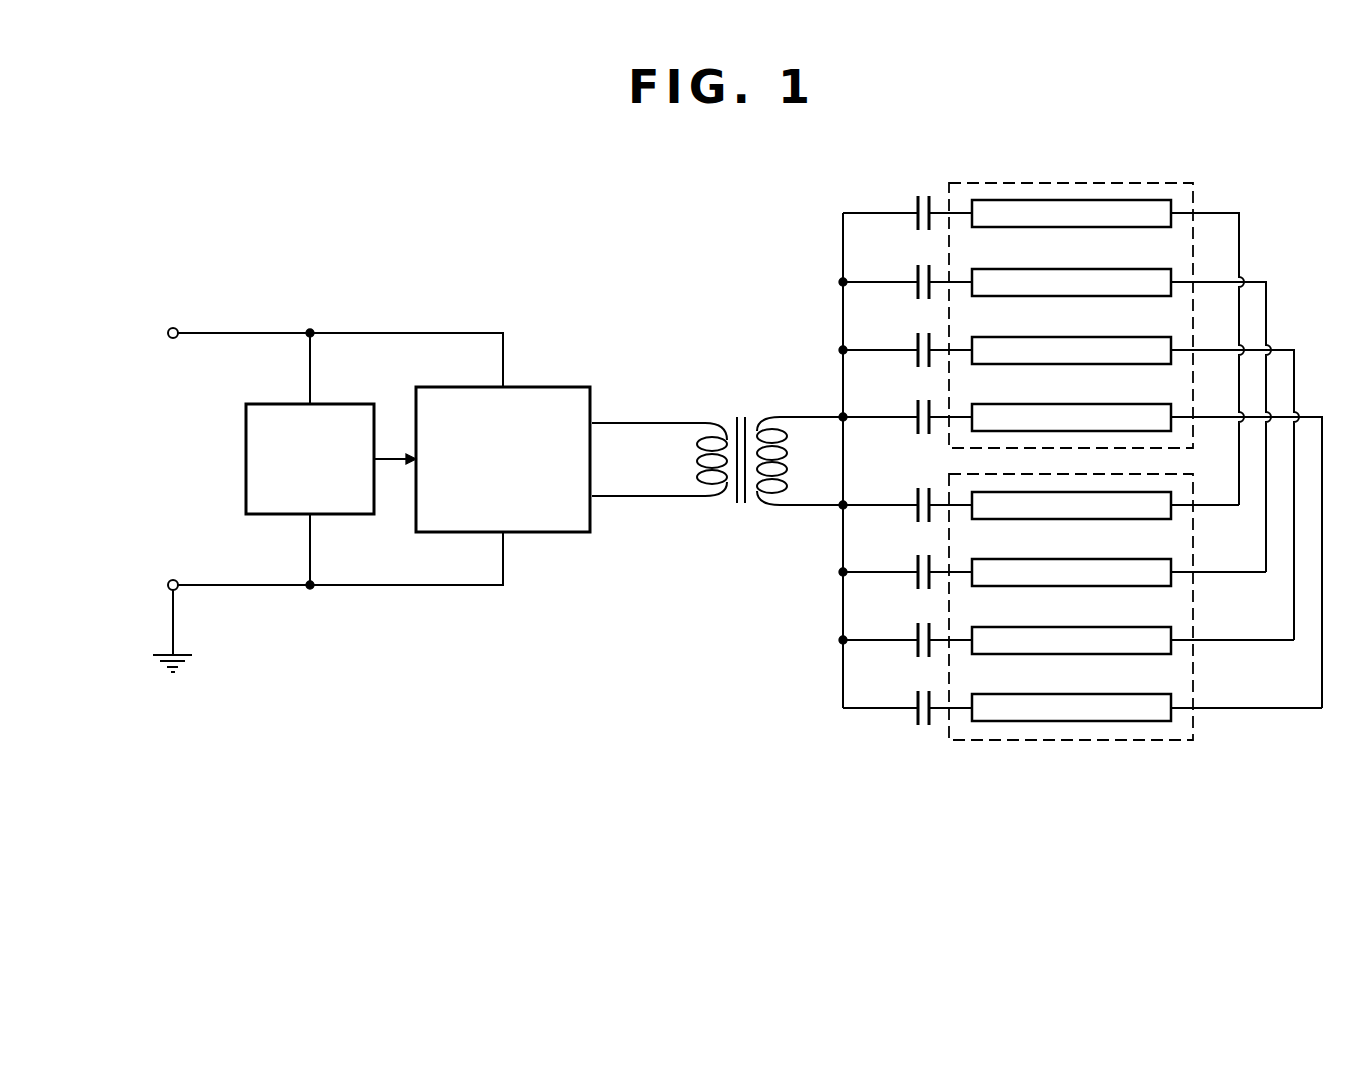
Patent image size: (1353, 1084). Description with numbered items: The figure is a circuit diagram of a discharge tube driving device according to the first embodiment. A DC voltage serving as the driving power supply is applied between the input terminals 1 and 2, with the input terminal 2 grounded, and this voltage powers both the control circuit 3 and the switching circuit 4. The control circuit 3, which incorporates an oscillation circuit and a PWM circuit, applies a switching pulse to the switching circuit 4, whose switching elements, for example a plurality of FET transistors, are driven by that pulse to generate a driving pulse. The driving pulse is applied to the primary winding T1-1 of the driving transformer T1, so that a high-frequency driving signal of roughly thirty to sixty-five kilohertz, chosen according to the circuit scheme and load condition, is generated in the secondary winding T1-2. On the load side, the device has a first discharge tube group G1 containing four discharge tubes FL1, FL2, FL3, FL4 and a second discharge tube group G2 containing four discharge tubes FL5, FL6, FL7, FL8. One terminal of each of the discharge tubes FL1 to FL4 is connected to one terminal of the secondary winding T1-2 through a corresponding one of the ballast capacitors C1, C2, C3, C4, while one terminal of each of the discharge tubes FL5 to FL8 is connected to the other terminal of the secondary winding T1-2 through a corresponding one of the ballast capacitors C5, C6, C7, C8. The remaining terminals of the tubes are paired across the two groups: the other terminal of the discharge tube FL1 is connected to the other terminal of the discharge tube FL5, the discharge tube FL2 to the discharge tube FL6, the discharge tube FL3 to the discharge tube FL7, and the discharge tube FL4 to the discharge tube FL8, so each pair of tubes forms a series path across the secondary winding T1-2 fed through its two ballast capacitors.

The input terminal 1 is at (173, 327).
The input terminal 2 is at (173, 579).
The control circuit 3 is at (330, 404).
The switching circuit 4 is at (533, 387).
The driving transformer T1 is at (717, 491).
The primary winding T1-1 is at (715, 505).
The secondary winding T1-2 is at (760, 510).
The ballast capacitor C1 is at (915, 208).
The ballast capacitor C2 is at (915, 277).
The ballast capacitor C3 is at (915, 345).
The ballast capacitor C4 is at (915, 412).
The ballast capacitor C5 is at (915, 500).
The ballast capacitor C6 is at (915, 567).
The ballast capacitor C7 is at (915, 635).
The ballast capacitor C8 is at (915, 703).
The discharge tube FL1 is at (1135, 200).
The discharge tube FL2 is at (1084, 268).
The discharge tube FL3 is at (1084, 336).
The discharge tube FL4 is at (1084, 404).
The discharge tube FL5 is at (1090, 519).
The discharge tube FL6 is at (1090, 586).
The discharge tube FL7 is at (1090, 654).
The discharge tube FL8 is at (1118, 722).
The first discharge tube group G1 is at (1027, 183).
The second discharge tube group G2 is at (1012, 741).